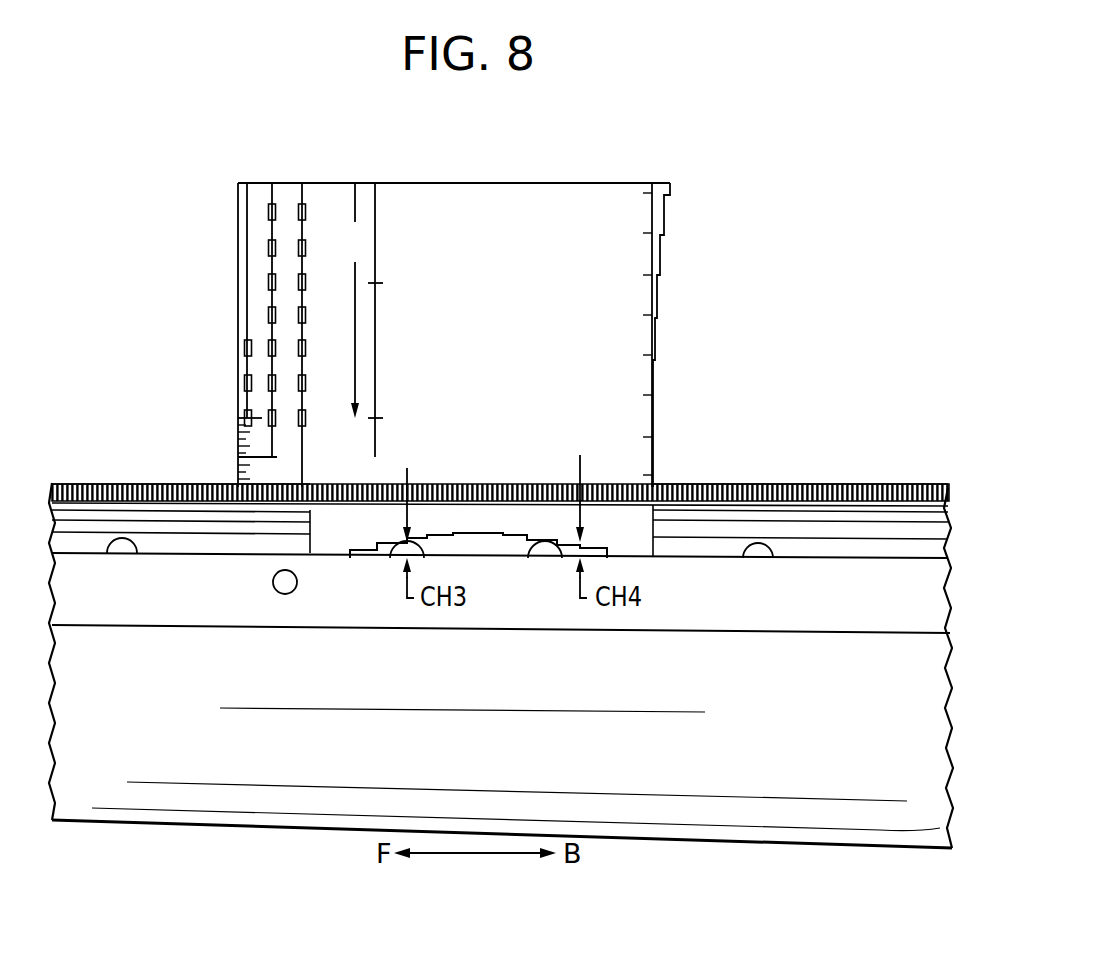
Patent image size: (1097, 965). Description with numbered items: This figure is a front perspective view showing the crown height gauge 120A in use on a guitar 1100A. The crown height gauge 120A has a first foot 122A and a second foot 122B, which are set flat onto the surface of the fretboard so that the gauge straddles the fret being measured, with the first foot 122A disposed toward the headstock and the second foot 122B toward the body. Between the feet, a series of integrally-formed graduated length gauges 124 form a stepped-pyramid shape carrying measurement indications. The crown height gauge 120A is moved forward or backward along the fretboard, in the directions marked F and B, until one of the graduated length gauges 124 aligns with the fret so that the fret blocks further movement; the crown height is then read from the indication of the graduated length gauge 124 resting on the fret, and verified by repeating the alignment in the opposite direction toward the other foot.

The crown height gauge 120A is at (500, 380).
The first foot 122A is at (312, 553).
The second foot 122B is at (653, 540).
The graduated length gauges 124 is at (495, 533).
The guitar 1100A is at (232, 835).